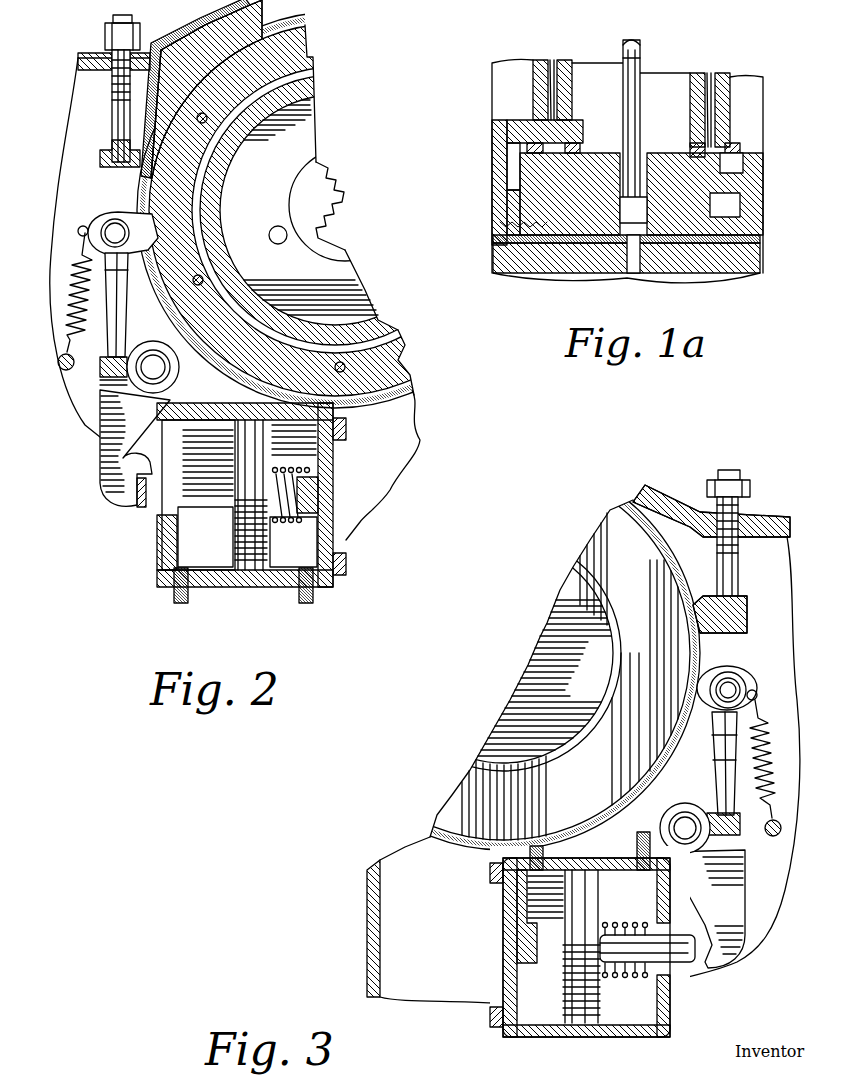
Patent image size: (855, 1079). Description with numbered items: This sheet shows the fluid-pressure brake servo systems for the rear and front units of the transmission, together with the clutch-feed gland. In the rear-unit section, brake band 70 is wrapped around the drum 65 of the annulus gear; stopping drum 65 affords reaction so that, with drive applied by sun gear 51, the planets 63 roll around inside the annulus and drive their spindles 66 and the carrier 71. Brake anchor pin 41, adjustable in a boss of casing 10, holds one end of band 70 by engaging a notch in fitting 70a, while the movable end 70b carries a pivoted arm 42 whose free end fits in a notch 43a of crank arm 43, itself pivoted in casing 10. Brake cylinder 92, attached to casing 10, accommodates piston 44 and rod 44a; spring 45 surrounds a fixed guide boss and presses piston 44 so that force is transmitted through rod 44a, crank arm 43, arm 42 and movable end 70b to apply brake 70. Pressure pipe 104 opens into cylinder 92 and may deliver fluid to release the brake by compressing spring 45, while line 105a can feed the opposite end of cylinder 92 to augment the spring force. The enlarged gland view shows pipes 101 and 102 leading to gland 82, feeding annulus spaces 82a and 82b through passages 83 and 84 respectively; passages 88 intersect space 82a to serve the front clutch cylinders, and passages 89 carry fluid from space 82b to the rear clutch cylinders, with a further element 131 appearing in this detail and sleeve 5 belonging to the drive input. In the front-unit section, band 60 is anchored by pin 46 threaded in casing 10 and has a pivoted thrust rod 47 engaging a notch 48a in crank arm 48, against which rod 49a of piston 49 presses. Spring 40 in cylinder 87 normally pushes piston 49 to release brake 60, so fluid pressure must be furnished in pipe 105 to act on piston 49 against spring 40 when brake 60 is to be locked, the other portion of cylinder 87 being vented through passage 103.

In FIG. 2, the casing 10 is at (85, 58).
In FIG. 3, the casing 10 is at (668, 478).
In FIG. 2, the fitting 70a is at (160, 52).
In FIG. 2, the drum 65 is at (297, 50).
In FIG. 2, the brake anchor pin 41 is at (118, 118).
In FIG. 2, the carrier 71 is at (310, 132).
In FIG. 2, the planet gears 63 is at (293, 213).
In FIG. 2, the sun gear 51 is at (332, 217).
In FIG. 2, the movable end 70b is at (126, 212).
In FIG. 2, the spindles 66 is at (279, 245).
In FIG. 2, the pivoted arm 42 is at (123, 288).
In FIG. 2, the notch 43a is at (124, 357).
In FIG. 2, the brake band 70 is at (413, 387).
In FIG. 2, the crank arm 43 is at (100, 458).
In FIG. 2, the rod 44a is at (207, 507).
In FIG. 2, the spring 45 is at (288, 522).
In FIG. 2, the pressure pipe 104 is at (173, 592).
In FIG. 2, the brake cylinder 92 is at (222, 563).
In FIG. 2, the piston 44 is at (256, 573).
In FIG. 2, the line 105a is at (313, 598).
In FIG. 1A, the pipe 102 is at (625, 97).
In FIG. 1A, the pipe 101 is at (647, 60).
In FIG. 1A, the passages 88 is at (548, 92).
In FIG. 1A, the passages 89 is at (713, 110).
In FIG. 1A, the gland 82 is at (595, 170).
In FIG. 1A, the annulus space 82a is at (523, 163).
In FIG. 1A, the annulus space 82b is at (730, 167).
In FIG. 1A, the passage 84 is at (697, 170).
In FIG. 1A, the passage 83 is at (597, 200).
In FIG. 1A, the port 131 is at (637, 267).
In FIG. 3, the pin 46 is at (735, 573).
In FIG. 3, the sleeve 5 is at (527, 687).
In FIG. 3, the thrust rod 47 is at (720, 737).
In FIG. 3, the notch 48a is at (713, 813).
In FIG. 3, the passage 103 is at (650, 829).
In FIG. 3, the pipe 105 is at (547, 853).
In FIG. 3, the band 60 is at (453, 843).
In FIG. 3, the cylinder 87 is at (517, 910).
In FIG. 3, the crank arm 48 is at (733, 863).
In FIG. 3, the piston 49 is at (560, 983).
In FIG. 3, the spring 40 is at (627, 973).
In FIG. 3, the rod 49a is at (673, 950).